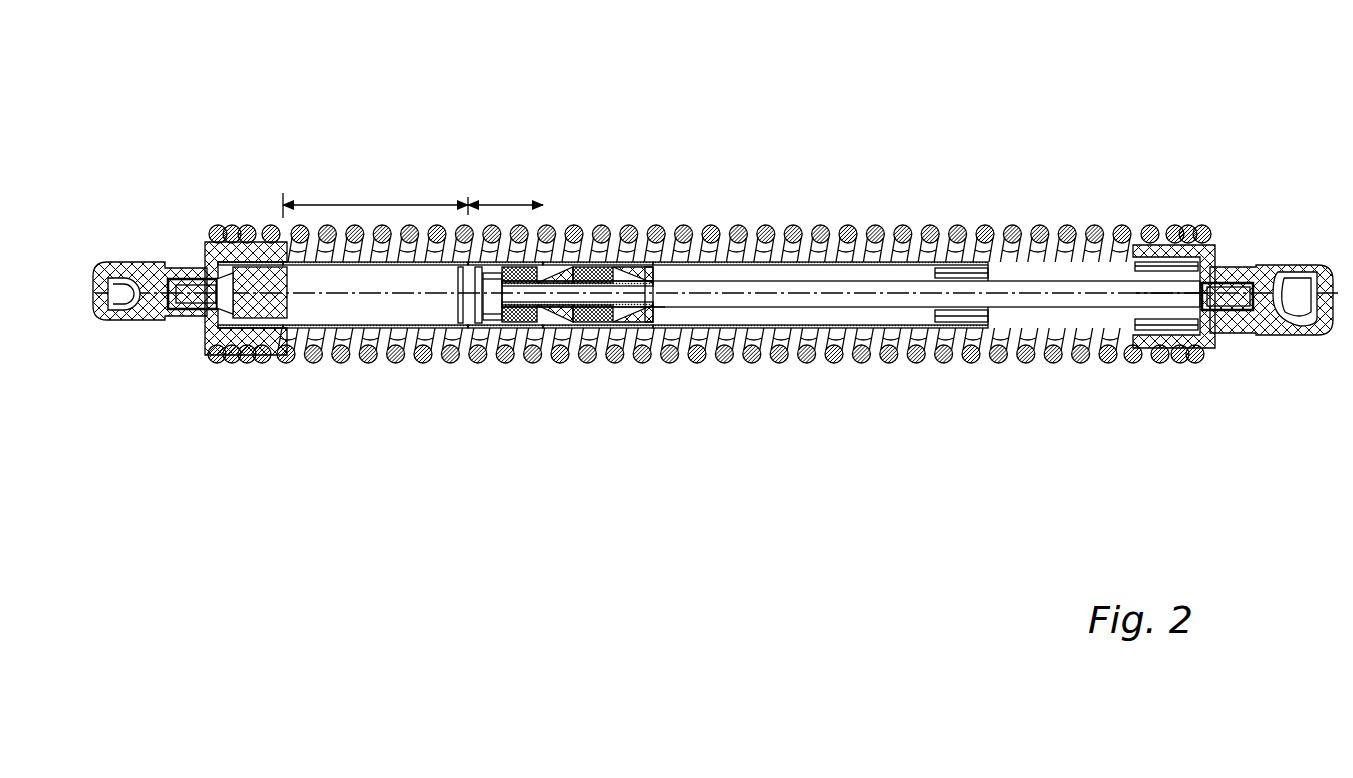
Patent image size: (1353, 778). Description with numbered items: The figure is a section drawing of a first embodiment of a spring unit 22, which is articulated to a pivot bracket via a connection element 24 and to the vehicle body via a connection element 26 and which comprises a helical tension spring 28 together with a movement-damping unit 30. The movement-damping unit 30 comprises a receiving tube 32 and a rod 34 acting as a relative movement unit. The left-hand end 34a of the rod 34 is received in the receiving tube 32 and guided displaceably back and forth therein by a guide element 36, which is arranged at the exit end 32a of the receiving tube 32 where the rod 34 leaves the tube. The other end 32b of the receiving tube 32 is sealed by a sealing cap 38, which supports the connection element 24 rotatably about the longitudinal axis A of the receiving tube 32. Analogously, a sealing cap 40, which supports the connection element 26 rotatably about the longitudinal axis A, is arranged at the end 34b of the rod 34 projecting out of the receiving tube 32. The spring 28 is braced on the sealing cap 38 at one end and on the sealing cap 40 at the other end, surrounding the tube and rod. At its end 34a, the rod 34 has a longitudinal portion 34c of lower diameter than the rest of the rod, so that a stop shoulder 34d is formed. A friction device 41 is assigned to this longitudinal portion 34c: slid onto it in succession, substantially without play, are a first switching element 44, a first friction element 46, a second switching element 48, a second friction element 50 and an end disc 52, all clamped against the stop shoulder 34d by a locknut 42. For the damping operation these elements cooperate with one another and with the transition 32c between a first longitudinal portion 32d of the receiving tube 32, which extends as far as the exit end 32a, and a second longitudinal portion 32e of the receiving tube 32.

The spring unit 22 is at (863, 82).
The connection element 24 is at (157, 320).
The connection element 26 is at (1275, 268).
The helical tension spring 28 is at (927, 233).
The movement-damping unit 30 is at (739, 318).
The receiving tube 32 is at (626, 317).
The exit end of the receiving tube 32a is at (993, 247).
The other end of the receiving tube 32b is at (262, 240).
The transition 32c is at (428, 340).
The first longitudinal portion of the receiving tube 32d is at (502, 203).
The second longitudinal portion of the receiving tube 32e is at (378, 203).
The rod 34 is at (895, 303).
The end of the rod 34a is at (670, 277).
The end of the rod 34b is at (1213, 270).
The longitudinal portion 34c is at (635, 270).
The stop shoulder 34d is at (650, 327).
The guide element 36 is at (955, 317).
The sealing cap 38 is at (207, 242).
The sealing cap 40 is at (1212, 348).
The friction device 41 is at (538, 412).
The locknut 42 is at (475, 333).
The first switching element 44 is at (630, 327).
The first friction element 46 is at (602, 327).
The second switching element 48 is at (563, 327).
The second friction element 50 is at (518, 333).
The end disc 52 is at (478, 333).
The longitudinal axis A is at (1150, 267).